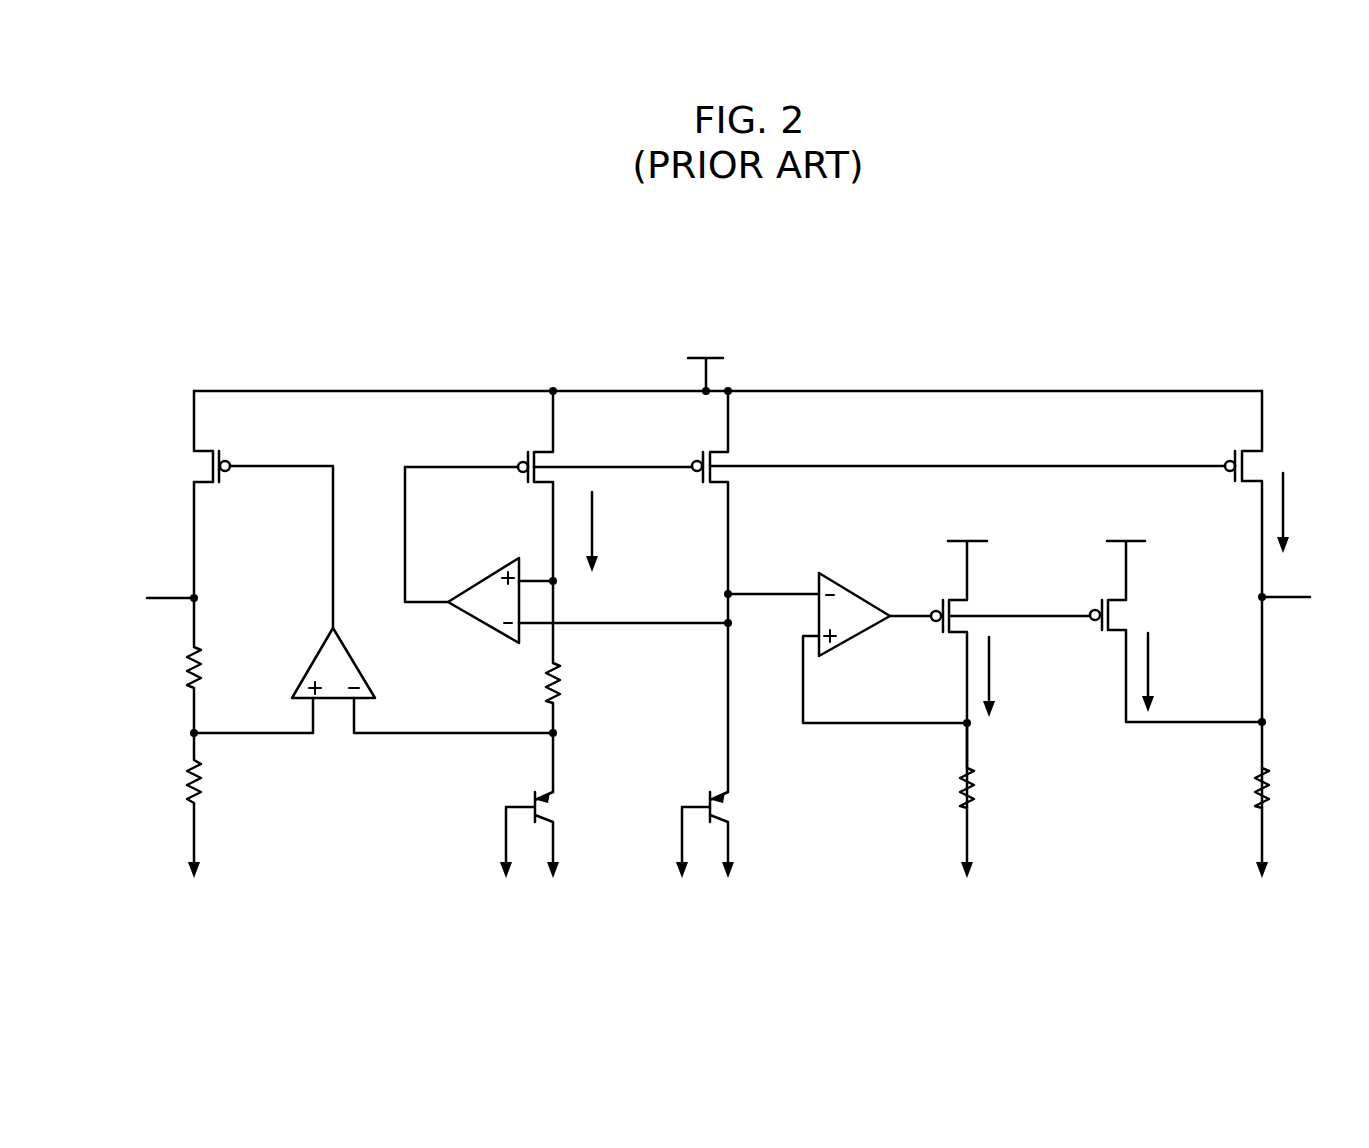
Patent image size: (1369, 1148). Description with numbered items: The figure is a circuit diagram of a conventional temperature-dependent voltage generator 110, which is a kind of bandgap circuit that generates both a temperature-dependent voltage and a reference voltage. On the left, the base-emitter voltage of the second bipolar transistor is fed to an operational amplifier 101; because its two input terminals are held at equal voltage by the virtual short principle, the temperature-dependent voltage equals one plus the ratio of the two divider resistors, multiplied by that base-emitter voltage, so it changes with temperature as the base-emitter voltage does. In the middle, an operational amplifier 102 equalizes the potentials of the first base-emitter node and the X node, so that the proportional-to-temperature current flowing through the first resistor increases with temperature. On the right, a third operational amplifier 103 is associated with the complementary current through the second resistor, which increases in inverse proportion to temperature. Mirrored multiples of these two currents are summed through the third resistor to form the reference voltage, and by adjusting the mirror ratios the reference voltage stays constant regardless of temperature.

The temperature-dependent voltage generator 110 is at (958, 303).
The operational amplifier 101 is at (355, 660).
The operational amplifier 102 is at (480, 577).
The operational amplifier 103 is at (855, 594).